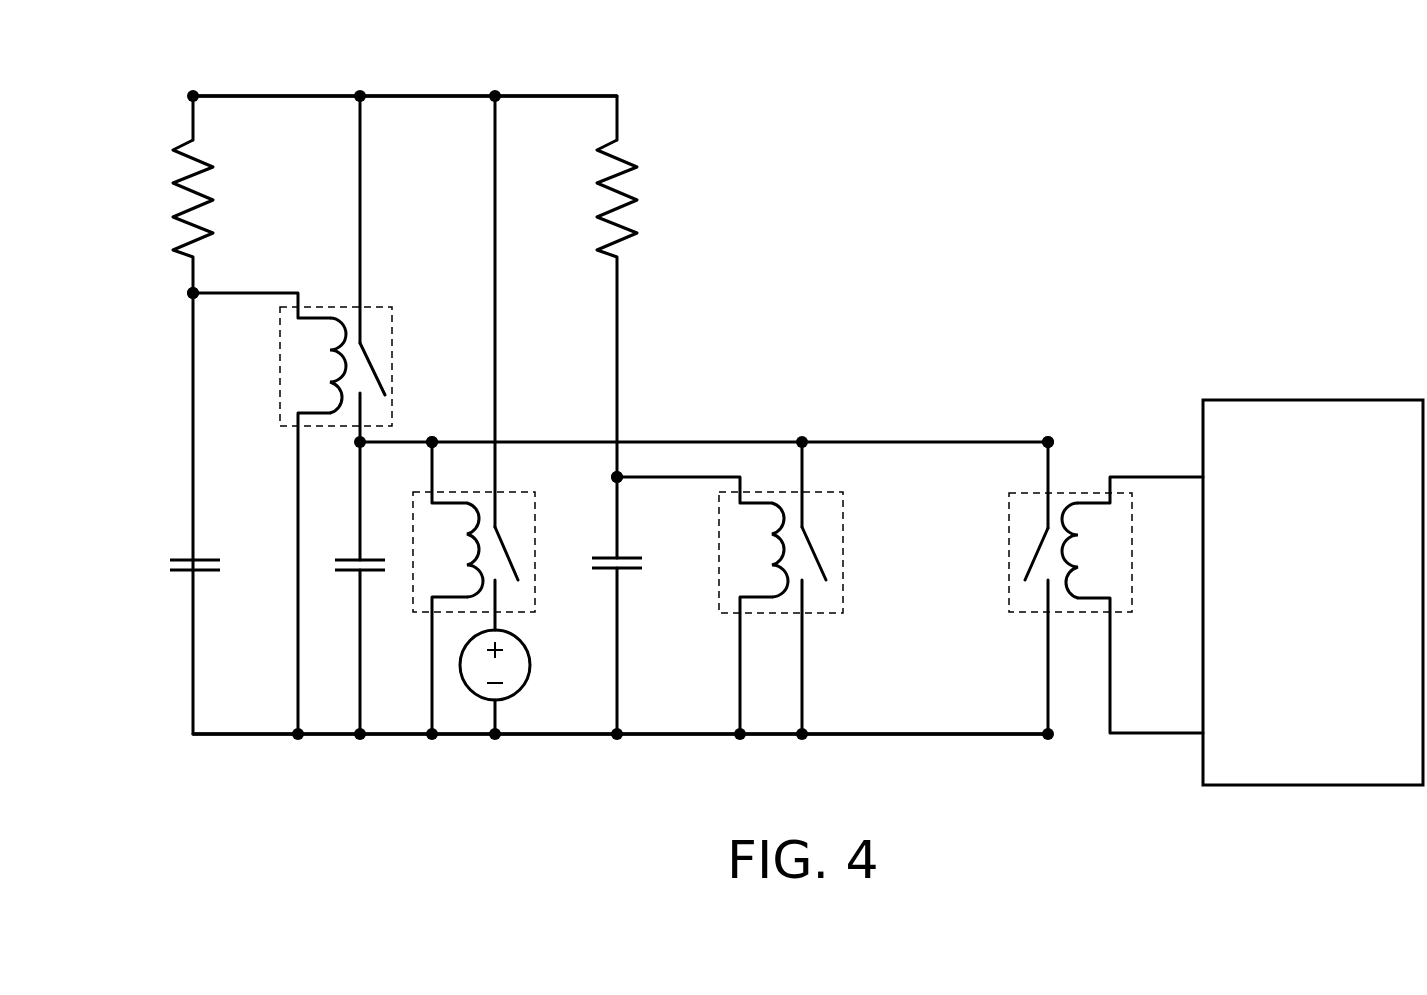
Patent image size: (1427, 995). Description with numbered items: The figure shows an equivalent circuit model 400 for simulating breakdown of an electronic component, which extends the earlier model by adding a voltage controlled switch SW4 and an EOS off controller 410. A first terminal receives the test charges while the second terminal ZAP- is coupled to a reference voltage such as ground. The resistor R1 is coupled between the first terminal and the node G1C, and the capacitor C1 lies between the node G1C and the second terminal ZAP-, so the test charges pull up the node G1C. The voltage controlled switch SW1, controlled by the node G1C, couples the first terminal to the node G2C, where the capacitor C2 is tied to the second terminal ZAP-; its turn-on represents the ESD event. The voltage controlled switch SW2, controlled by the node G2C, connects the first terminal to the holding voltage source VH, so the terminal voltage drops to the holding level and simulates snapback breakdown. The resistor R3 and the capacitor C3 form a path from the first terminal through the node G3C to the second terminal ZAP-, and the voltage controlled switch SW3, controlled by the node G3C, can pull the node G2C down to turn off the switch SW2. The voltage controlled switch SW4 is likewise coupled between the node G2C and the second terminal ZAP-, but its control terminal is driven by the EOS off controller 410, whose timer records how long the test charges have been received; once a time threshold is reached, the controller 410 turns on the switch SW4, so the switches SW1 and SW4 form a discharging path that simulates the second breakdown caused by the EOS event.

The equivalent circuit model 400 is at (1142, 148).
The EOS off controller 410 is at (1359, 398).
The resistor R1 is at (176, 198).
The resistor R3 is at (599, 198).
The capacitor C1 is at (189, 547).
The capacitor C2 is at (352, 547).
The capacitor C3 is at (626, 581).
The voltage controlled switch SW1 is at (373, 308).
The voltage controlled switch SW2 is at (518, 492).
The voltage controlled switch SW3 is at (825, 492).
The voltage controlled switch SW4 is at (1025, 492).
The holding voltage source VH is at (526, 652).
The node G1C is at (192, 296).
The node G2C is at (432, 441).
The node G3C is at (620, 481).
The second terminal ZAP- is at (620, 756).